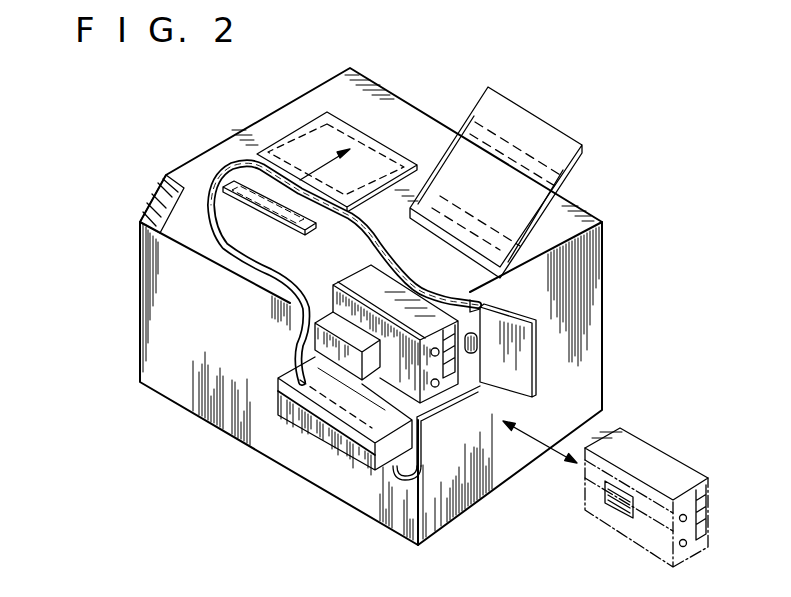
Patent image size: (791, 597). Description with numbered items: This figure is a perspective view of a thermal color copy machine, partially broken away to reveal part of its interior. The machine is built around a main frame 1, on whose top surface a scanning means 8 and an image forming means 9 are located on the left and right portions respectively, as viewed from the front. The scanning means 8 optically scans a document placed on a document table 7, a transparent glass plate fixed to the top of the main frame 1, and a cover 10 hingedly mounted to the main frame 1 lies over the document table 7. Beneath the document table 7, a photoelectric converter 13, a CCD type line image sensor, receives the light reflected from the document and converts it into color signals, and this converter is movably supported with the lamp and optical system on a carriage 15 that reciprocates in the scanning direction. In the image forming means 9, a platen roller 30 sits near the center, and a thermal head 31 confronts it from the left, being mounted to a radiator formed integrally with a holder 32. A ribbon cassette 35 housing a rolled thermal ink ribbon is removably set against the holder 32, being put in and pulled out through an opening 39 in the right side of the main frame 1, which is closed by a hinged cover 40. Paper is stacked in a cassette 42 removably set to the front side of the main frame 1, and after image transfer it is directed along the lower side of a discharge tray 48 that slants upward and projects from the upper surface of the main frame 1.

The main frame 1 is at (602, 247).
The document table 7 is at (288, 140).
The scanning means 8 is at (250, 242).
The image forming means 9 is at (377, 388).
The cover 10 is at (387, 152).
The photoelectric converter 13 is at (290, 238).
The carriage 15 is at (308, 228).
The platen roller 30 is at (478, 338).
The thermal head 31 is at (452, 358).
The holder 32 is at (318, 348).
The ribbon cassette 35 is at (374, 275).
The opening 39 is at (438, 412).
The cover 40 is at (519, 372).
The cassette 42 is at (305, 420).
The discharge tray 48 is at (550, 135).